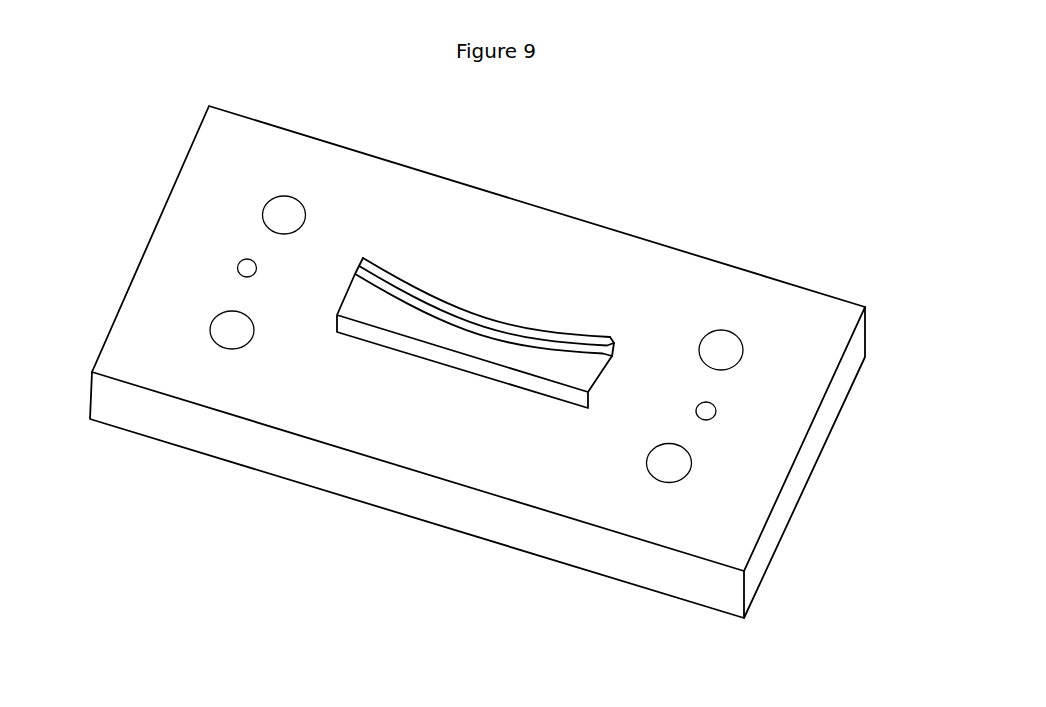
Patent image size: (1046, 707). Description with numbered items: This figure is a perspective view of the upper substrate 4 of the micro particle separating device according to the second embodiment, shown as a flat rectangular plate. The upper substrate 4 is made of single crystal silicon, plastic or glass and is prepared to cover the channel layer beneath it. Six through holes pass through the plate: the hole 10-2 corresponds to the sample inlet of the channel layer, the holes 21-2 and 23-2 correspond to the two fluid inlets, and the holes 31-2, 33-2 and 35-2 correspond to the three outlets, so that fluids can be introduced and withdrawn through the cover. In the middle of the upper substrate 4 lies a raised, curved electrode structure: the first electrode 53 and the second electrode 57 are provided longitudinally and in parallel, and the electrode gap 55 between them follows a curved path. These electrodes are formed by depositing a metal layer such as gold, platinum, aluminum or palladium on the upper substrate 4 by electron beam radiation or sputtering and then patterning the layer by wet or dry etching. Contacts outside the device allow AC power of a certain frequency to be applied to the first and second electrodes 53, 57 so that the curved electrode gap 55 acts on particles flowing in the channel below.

The upper substrate 4 is at (528, 535).
The hole 10-2 is at (716, 413).
The hole 21-2 is at (720, 343).
The hole 23-2 is at (669, 468).
The hole 31-2 is at (283, 208).
The hole 33-2 is at (232, 332).
The hole 35-2 is at (244, 268).
The first electrode 53 is at (508, 325).
The electrode gap 55 is at (413, 298).
The second electrode 57 is at (430, 330).